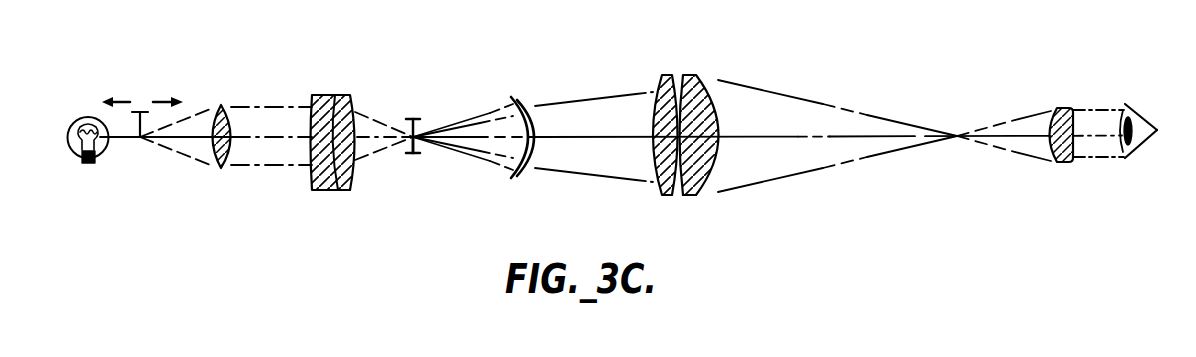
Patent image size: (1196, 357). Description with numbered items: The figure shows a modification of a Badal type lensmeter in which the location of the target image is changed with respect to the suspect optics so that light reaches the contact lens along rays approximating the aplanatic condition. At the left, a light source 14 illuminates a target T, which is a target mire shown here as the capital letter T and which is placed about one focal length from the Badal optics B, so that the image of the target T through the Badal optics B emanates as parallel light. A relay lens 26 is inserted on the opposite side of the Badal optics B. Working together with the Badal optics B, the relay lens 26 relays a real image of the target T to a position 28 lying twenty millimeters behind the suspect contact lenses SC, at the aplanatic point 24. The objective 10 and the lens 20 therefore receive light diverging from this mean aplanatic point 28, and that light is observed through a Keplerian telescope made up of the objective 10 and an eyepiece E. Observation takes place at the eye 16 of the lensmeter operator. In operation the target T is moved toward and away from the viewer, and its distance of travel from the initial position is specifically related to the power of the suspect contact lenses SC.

The light source 14 is at (96, 117).
The target T is at (141, 106).
The relay lens 26 is at (222, 106).
The Badal optics B is at (343, 95).
The position of relayed target image 28 is at (416, 118).
The aplanatic point 24 is at (420, 148).
The suspect contact lenses SC is at (519, 172).
The lens 20 is at (665, 76).
The objective 10 is at (702, 76).
The eyepiece E is at (1060, 108).
The eye 16 is at (1146, 120).